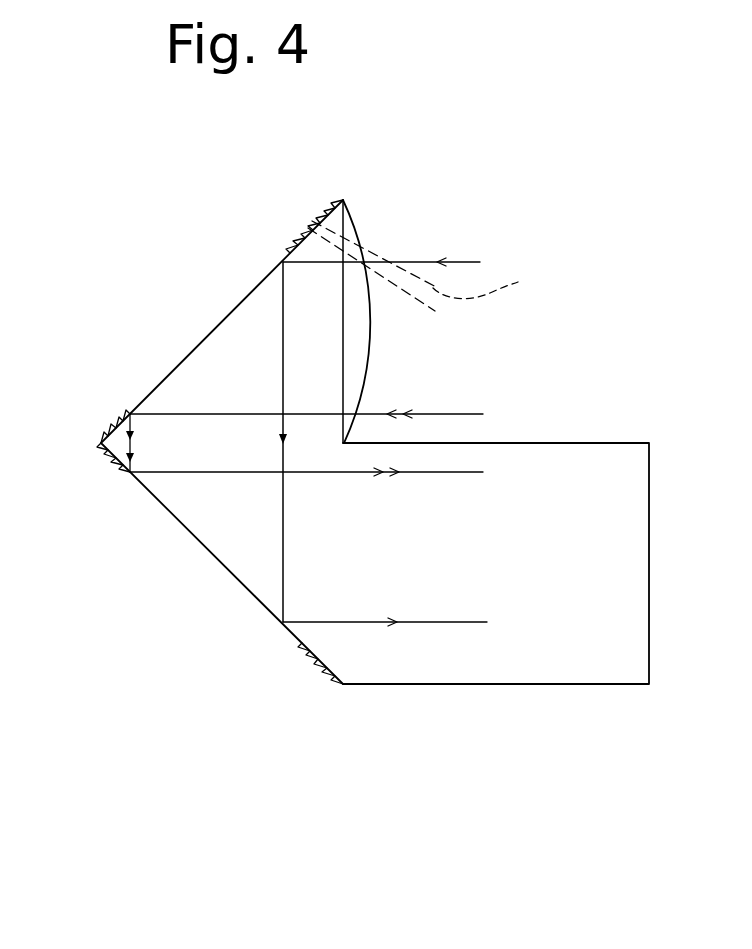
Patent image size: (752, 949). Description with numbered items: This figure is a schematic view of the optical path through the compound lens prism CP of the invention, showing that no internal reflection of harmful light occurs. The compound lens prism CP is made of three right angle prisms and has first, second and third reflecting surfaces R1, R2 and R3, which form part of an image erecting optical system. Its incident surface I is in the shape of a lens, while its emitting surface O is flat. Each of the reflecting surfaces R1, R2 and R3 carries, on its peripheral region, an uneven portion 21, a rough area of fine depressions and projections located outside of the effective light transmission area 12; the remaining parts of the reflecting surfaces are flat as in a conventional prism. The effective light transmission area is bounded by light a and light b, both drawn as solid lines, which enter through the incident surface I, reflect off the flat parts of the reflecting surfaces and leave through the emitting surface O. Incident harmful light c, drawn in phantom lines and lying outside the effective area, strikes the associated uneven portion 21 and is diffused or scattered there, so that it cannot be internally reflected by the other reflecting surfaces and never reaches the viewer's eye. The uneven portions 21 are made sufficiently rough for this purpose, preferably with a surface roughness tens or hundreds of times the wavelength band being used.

The uneven portion 21 is at (301, 232).
The effective light transmission area 12 is at (293, 240).
The first reflecting surface R1 is at (115, 398).
The second reflecting surface R2 is at (123, 482).
The third reflecting surface R3 is at (550, 518).
The compound lens prism CP is at (580, 295).
The emitting surface O is at (553, 643).
The incident surface I is at (367, 304).
The light a is at (461, 262).
The light b is at (460, 413).
The harmful light c is at (423, 266).